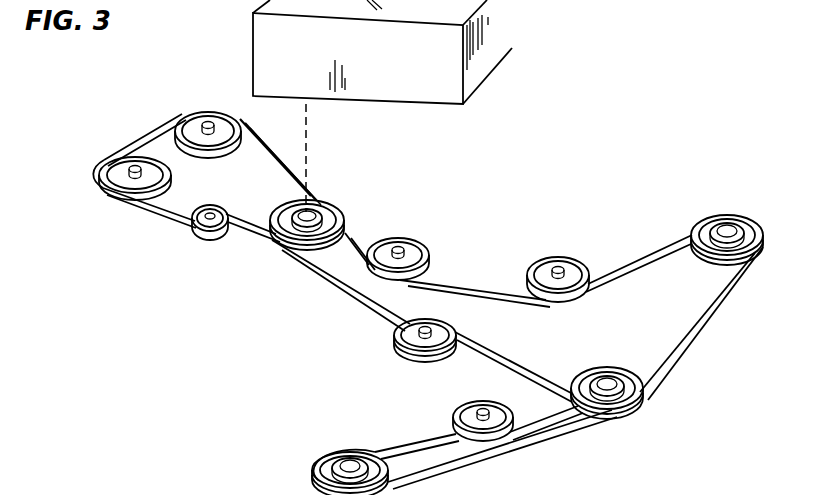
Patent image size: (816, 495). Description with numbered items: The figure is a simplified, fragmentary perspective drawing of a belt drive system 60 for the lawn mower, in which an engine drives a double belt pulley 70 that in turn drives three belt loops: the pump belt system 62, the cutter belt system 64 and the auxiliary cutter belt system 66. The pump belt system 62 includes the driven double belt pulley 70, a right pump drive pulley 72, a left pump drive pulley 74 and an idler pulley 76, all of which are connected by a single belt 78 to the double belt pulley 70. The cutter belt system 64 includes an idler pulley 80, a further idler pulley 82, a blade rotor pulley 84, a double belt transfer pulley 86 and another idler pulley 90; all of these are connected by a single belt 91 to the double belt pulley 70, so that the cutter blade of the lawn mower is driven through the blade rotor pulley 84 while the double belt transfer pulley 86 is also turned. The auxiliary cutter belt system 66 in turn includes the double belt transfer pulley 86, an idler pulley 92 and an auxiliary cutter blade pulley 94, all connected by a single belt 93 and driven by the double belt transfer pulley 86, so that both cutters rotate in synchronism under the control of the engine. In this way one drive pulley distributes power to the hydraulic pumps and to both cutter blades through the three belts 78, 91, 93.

The belt drive system 60 is at (482, 211).
The pump belt system 62 is at (183, 252).
The cutter belt system 64 is at (683, 216).
The auxiliary cutter belt system 66 is at (345, 431).
The double belt pulley 70 is at (338, 213).
The right pump drive pulley 72 is at (110, 163).
The left pump drive pulley 74 is at (193, 123).
The idler pulley 76 is at (212, 237).
The belt 78 is at (170, 208).
The idler pulley 80 is at (426, 251).
The idler pulley 82 is at (556, 257).
The blade rotor pulley 84 is at (740, 217).
The double belt transfer pulley 86 is at (610, 368).
The idler pulley 90 is at (440, 353).
The belt 91 is at (698, 332).
The idler pulley 92 is at (490, 400).
The belt 93 is at (453, 470).
The auxiliary cutter blade pulley 94 is at (327, 468).